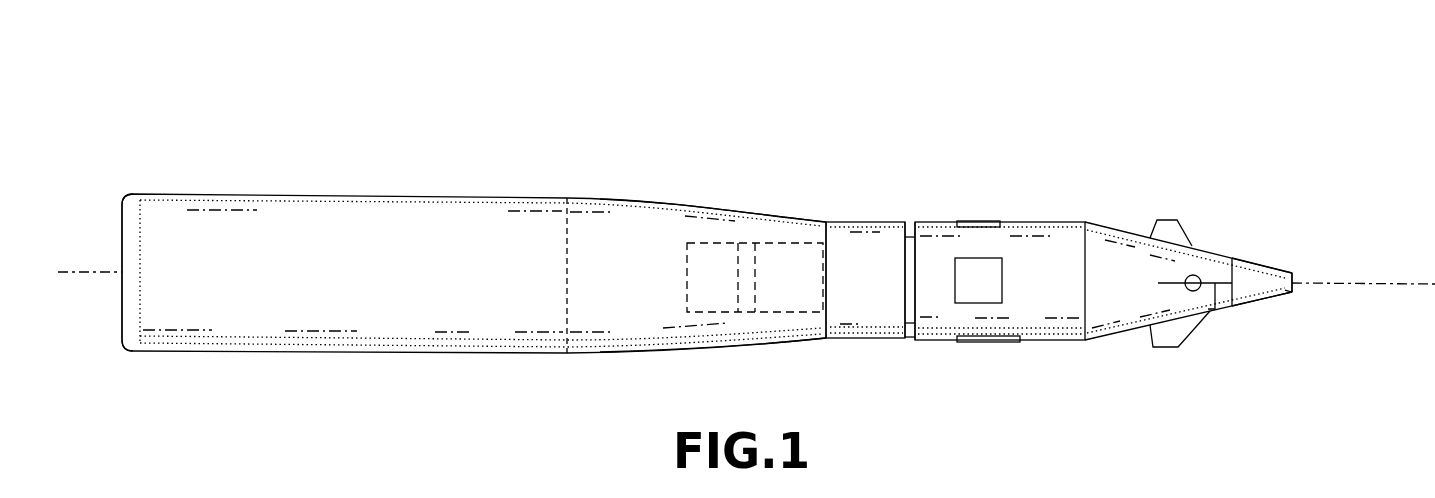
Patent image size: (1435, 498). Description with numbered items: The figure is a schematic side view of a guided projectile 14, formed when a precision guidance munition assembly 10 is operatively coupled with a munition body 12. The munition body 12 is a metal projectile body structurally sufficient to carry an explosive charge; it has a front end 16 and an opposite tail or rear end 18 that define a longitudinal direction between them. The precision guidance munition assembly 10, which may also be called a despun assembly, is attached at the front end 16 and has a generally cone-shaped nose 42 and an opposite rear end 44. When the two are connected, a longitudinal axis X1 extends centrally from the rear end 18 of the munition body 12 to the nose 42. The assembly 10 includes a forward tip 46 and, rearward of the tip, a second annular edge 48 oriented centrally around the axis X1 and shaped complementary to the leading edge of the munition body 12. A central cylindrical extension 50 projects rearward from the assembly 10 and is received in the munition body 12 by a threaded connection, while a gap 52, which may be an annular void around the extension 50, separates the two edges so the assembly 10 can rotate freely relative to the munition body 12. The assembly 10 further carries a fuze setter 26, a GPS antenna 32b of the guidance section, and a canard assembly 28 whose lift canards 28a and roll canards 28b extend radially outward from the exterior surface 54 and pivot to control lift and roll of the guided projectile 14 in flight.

The precision guidance munition assembly 10 is at (1062, 220).
The munition body 12 is at (513, 198).
The guided projectile 14 is at (563, 107).
The front end 16 is at (808, 210).
The rear end 18 is at (110, 247).
The fuze setter 26 is at (1262, 262).
The canard assembly 28 is at (1198, 287).
The lift canard 28a is at (1208, 310).
The roll canard 28b is at (1165, 223).
The GPS antenna 32b is at (977, 222).
The nose 42 is at (1303, 268).
The rear end 44 is at (682, 258).
The forward tip 46 is at (1293, 291).
The second annular edge 48 is at (906, 293).
The central cylindrical extension 50 is at (777, 250).
The gap 52 is at (910, 338).
The exterior surface 54 is at (1120, 232).
The longitudinal axis X1 is at (68, 276).